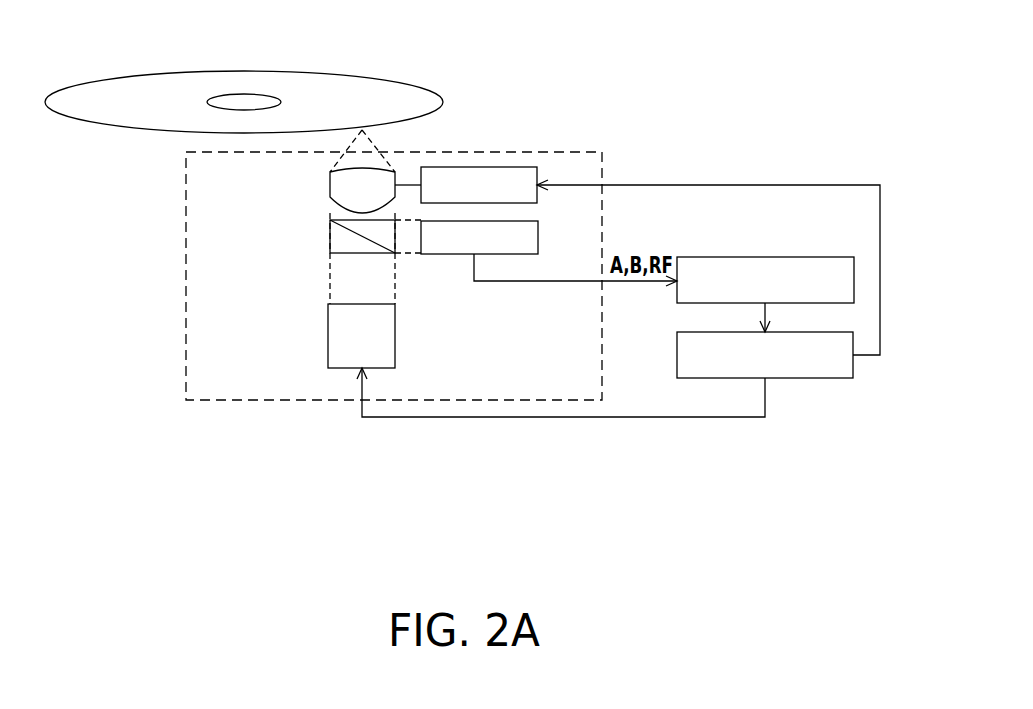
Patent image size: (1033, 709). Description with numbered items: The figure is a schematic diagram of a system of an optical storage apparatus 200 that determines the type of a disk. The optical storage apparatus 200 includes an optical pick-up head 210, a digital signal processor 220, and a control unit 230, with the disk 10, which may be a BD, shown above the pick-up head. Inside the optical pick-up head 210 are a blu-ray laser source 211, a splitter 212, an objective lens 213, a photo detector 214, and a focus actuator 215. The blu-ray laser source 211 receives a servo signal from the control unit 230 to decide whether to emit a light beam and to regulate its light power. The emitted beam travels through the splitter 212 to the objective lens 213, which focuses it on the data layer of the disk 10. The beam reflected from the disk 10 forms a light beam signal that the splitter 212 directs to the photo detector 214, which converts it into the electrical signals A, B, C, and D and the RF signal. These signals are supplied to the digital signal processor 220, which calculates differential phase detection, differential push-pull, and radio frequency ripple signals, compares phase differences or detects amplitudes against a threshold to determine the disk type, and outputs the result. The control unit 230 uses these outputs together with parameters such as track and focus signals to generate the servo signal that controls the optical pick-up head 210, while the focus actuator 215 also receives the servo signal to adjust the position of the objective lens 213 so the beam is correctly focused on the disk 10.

The disk 10 is at (185, 72).
The optical storage apparatus 200 is at (877, 568).
The optical pick-up head 210 is at (183, 192).
The blu-ray laser source 211 is at (328, 343).
The splitter 212 is at (330, 238).
The objective lens 213 is at (330, 186).
The photo detector 214 is at (538, 238).
The focus actuator 215 is at (518, 167).
The digital signal processor 220 is at (728, 257).
The control unit 230 is at (803, 378).